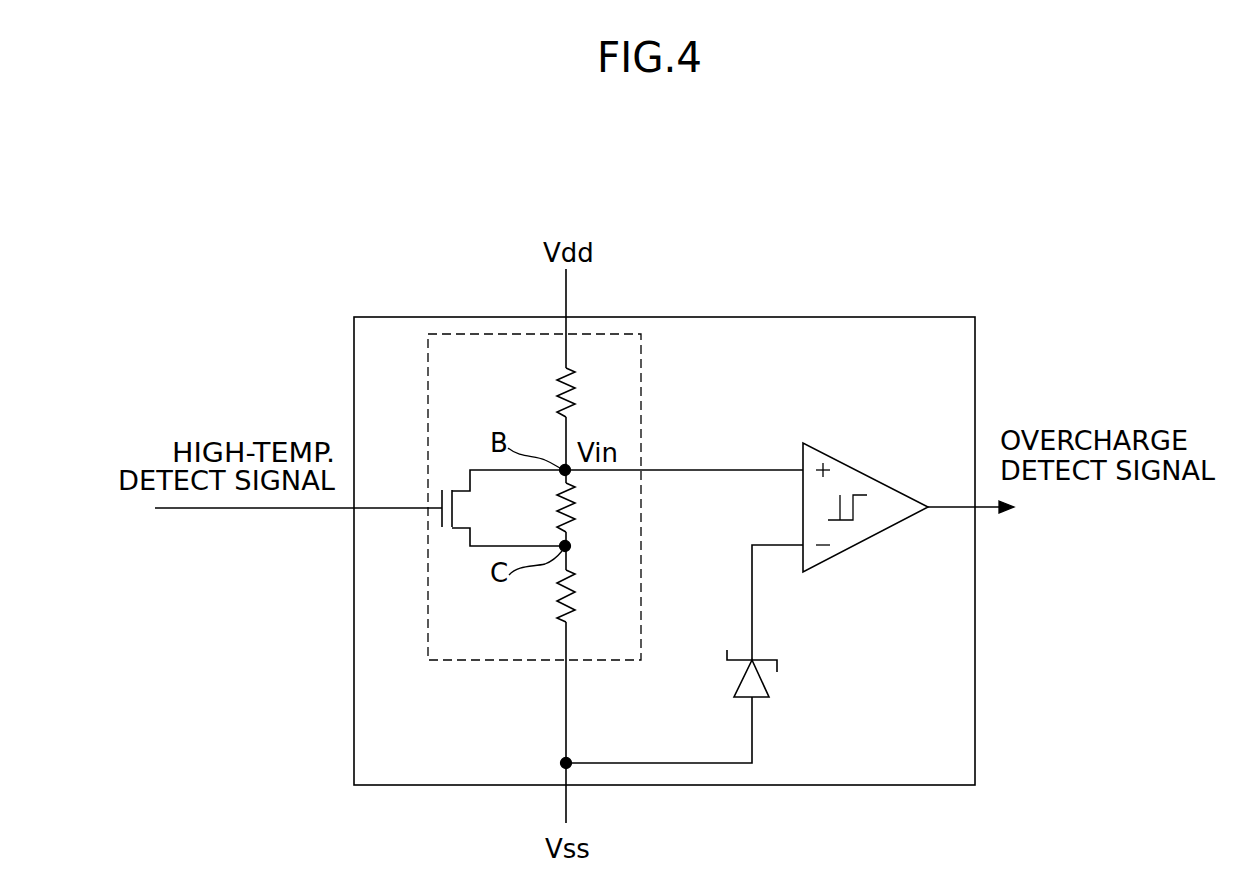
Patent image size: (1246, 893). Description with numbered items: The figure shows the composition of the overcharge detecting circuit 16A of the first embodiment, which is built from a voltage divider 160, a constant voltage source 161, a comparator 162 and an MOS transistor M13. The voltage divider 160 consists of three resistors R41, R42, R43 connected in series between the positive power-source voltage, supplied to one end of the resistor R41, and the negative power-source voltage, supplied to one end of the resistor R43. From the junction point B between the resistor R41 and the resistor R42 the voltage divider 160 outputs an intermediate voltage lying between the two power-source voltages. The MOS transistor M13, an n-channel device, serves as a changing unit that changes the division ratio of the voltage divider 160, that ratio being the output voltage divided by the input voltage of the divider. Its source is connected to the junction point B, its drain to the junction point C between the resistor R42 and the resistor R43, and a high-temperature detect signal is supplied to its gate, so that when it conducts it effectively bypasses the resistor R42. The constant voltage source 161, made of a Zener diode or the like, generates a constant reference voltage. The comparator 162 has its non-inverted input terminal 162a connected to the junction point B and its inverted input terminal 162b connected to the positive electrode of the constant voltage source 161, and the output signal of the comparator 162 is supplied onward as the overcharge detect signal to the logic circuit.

The overcharge detecting circuit 16A is at (858, 317).
The voltage divider 160 is at (617, 333).
The MOS transistor M13 is at (453, 478).
The resistor R41 is at (597, 392).
The resistor R42 is at (597, 507).
The resistor R43 is at (597, 596).
The comparator 162 is at (868, 475).
The non-inverted input terminal 162a is at (801, 464).
The inverted input terminal 162b is at (801, 539).
The constant voltage source 161 is at (762, 655).